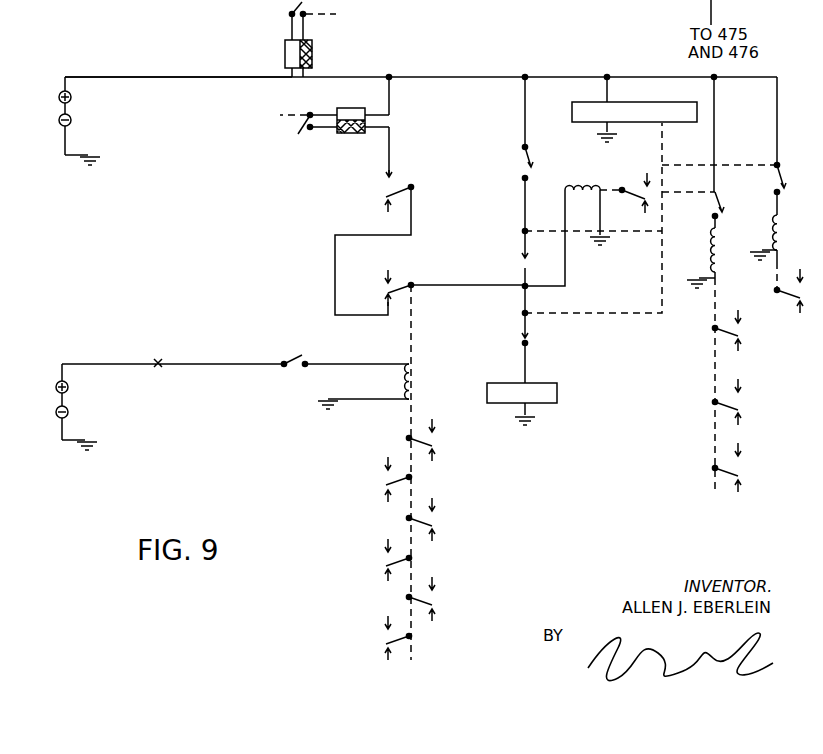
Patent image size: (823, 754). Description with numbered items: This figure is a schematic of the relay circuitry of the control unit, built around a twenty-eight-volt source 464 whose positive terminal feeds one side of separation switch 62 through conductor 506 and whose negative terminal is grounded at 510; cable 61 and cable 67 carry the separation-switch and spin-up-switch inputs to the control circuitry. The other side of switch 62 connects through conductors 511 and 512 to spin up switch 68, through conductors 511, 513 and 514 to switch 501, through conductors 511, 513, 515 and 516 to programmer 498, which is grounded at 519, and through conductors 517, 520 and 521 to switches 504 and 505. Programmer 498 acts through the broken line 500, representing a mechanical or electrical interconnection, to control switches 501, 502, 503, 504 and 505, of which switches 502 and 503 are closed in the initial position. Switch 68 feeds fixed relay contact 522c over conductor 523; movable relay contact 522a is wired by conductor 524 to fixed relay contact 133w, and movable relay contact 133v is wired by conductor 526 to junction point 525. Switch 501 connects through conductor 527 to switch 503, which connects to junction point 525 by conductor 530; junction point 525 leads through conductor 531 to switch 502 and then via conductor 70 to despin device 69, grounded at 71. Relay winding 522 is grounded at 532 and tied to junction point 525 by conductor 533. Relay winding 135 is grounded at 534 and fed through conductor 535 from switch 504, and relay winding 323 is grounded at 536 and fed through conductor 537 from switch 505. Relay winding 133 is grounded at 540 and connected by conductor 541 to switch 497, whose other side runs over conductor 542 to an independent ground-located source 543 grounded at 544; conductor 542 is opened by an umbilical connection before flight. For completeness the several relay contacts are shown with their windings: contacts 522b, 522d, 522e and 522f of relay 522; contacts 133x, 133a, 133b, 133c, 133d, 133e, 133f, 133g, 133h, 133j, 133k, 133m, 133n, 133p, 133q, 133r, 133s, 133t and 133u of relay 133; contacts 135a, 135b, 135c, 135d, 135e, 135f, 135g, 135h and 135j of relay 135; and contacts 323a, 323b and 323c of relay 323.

The twenty-eight-volt source 464 is at (62, 111).
The ground 510 is at (83, 160).
The conductor 506 is at (174, 77).
The cable 61 is at (285, 51).
The separation switch 62 is at (312, 8).
The cable 67 is at (359, 108).
The spin-up switch 68 is at (301, 125).
The conductor 511 is at (378, 77).
The conductor 512 is at (391, 104).
The conductor 513 is at (512, 77).
The conductor 514 is at (522, 121).
The conductor 515 is at (568, 77).
The conductor 516 is at (606, 95).
The conductor 517 is at (684, 77).
The programmer 498 is at (672, 104).
The ground 519 is at (600, 130).
The conductor 520 is at (716, 120).
The conductor 521 is at (779, 120).
The fixed relay contact 522c is at (366, 160).
The movable relay contact 522a is at (387, 188).
The contact 522b is at (365, 212).
The conductor 523 is at (394, 142).
The conductor 524 is at (412, 201).
The switch 501 is at (521, 170).
The conductor 527 is at (522, 202).
The switch 503 is at (520, 232).
The relay winding 522 is at (562, 225).
The contact 522f is at (628, 166).
The switch blade 522d is at (640, 186).
The contact 522e is at (642, 208).
The broken line 500 is at (670, 184).
The switch 505 is at (776, 173).
The switch 504 is at (712, 199).
The conductor 535 is at (716, 221).
The conductor 537 is at (780, 200).
The ground 532 is at (592, 240).
The relay winding 323 is at (775, 240).
The contact 323c is at (800, 268).
The ground 536 is at (755, 258).
The relay winding 135 is at (712, 258).
The ground 534 is at (702, 290).
The contact 135c is at (739, 384).
The contact 133x is at (386, 275).
The movable relay contact 133v is at (386, 292).
The fixed relay contact 133w is at (386, 304).
The conductor 526 is at (457, 291).
The conductor 530 is at (522, 272).
The junction point 525 is at (546, 277).
The conductor 531 is at (522, 311).
The conductor 533 is at (563, 292).
The switch 502 is at (523, 331).
The switch blade 323a is at (783, 306).
The contact 323b is at (806, 312).
The switch blade 135a is at (742, 334).
The contact 135b is at (742, 347).
The contact 135f is at (740, 382).
The switch blade 135d is at (742, 408).
The contact 135e is at (740, 420).
The contact 135j is at (742, 450).
The switch blade 135g is at (742, 470).
The contact 135h is at (742, 486).
The conductor 542 is at (112, 364).
The switch 497 is at (298, 357).
The conductor 541 is at (374, 365).
The ground 540 is at (367, 398).
The relay winding 133 is at (412, 384).
The source of voltage 543 is at (58, 402).
The ground 544 is at (80, 450).
The conductor 70 is at (522, 349).
The despin device 69 is at (557, 390).
The ground 71 is at (532, 416).
The contact 133c is at (434, 424).
The switch blade 133a is at (433, 442).
The contact 133b is at (435, 460).
The contact 133f is at (388, 458).
The switch blade 133d is at (386, 480).
The contact 133e is at (386, 492).
The contact 133j is at (434, 502).
The switch blade 133g is at (433, 521).
The contact 133h is at (435, 538).
The contact 133n is at (387, 540).
The switch blade 133k is at (386, 561).
The contact 133m is at (386, 574).
The contact 133r is at (434, 582).
The switch blade 133p is at (433, 600).
The contact 133q is at (435, 618).
The contact 133u is at (387, 617).
The switch blade 133s is at (386, 639).
The contact 133t is at (386, 653).